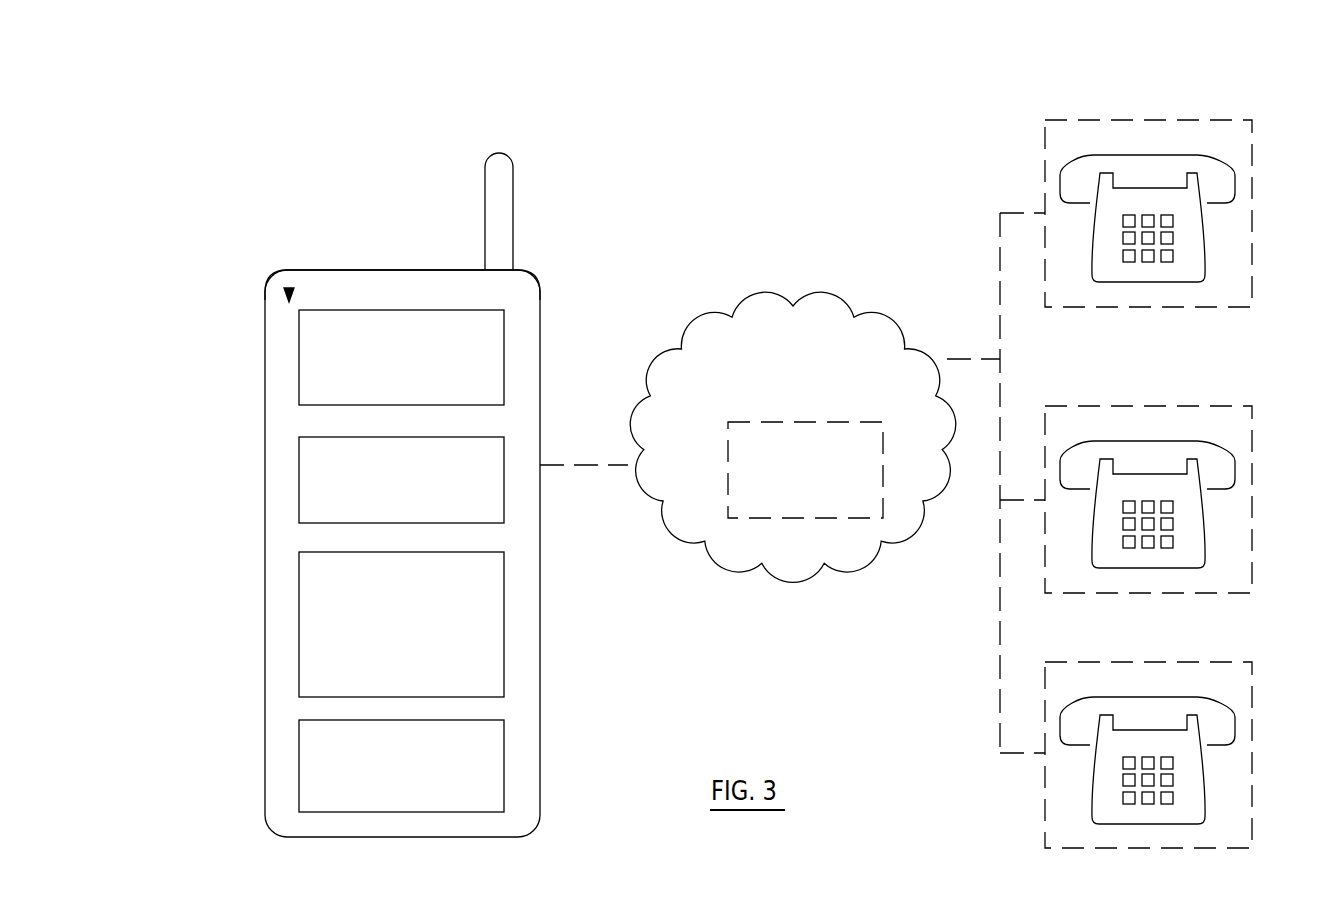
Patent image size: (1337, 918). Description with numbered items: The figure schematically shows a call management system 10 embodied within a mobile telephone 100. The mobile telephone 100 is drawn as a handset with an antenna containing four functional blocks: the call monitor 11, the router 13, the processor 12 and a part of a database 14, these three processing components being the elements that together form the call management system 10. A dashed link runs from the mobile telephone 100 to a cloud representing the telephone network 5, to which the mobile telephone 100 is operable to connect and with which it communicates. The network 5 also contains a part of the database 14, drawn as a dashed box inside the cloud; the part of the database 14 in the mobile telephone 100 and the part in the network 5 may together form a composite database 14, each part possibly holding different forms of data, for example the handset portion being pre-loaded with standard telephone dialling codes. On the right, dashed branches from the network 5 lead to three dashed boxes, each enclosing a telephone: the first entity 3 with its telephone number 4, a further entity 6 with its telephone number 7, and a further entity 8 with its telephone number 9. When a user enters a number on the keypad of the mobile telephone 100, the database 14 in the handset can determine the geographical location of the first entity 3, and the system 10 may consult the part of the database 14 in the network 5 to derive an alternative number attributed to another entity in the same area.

The call management system 10 is at (289, 298).
The mobile telephone 100 is at (534, 272).
The call monitor 11 is at (401, 357).
The router 13 is at (401, 480).
The processor 12 is at (401, 624).
The database 14 is at (591, 617).
The telephone network 5 is at (795, 300).
The first entity 3 is at (1228, 120).
The telephone number 4 is at (1204, 250).
The further entity 6 is at (1236, 406).
The telephone number 7 is at (1204, 536).
The further entity 8 is at (1253, 683).
The telephone number 9 is at (1204, 792).